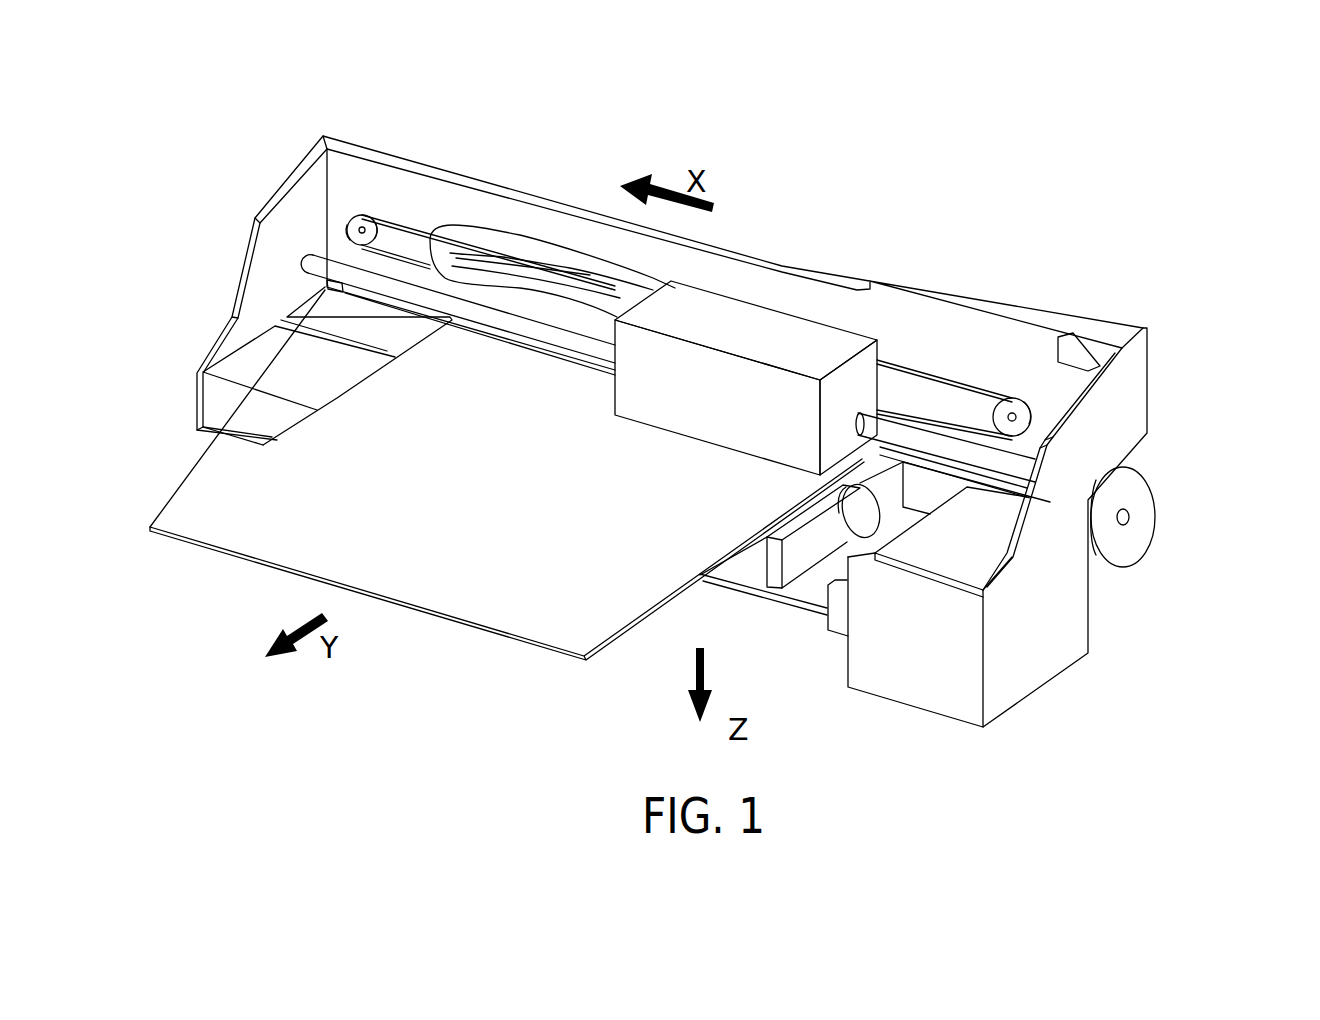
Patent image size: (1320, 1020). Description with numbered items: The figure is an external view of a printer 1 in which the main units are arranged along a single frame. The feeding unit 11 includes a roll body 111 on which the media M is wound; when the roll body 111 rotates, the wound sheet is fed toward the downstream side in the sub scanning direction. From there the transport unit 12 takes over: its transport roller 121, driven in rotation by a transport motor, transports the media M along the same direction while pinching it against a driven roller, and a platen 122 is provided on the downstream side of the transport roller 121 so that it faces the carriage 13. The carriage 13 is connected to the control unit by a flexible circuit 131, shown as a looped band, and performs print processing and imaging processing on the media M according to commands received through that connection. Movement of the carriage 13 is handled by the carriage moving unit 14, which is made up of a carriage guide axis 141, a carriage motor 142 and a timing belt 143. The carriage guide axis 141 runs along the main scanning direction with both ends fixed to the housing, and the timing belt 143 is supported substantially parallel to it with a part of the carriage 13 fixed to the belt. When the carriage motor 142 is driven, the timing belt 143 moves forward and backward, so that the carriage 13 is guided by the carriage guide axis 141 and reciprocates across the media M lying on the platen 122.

The printer 1 is at (945, 106).
The feeding unit 11 is at (1205, 484).
The roll body 111 is at (1138, 537).
The transport unit 12 is at (898, 515).
The transport roller 121 is at (863, 526).
The platen 122 is at (287, 362).
The carriage 13 is at (714, 308).
The flexible circuit 131 is at (490, 236).
The carriage moving unit 14 is at (1027, 372).
The carriage guide axis 141 is at (930, 440).
The carriage motor 142 is at (996, 406).
The timing belt 143 is at (402, 222).
The media M is at (297, 537).